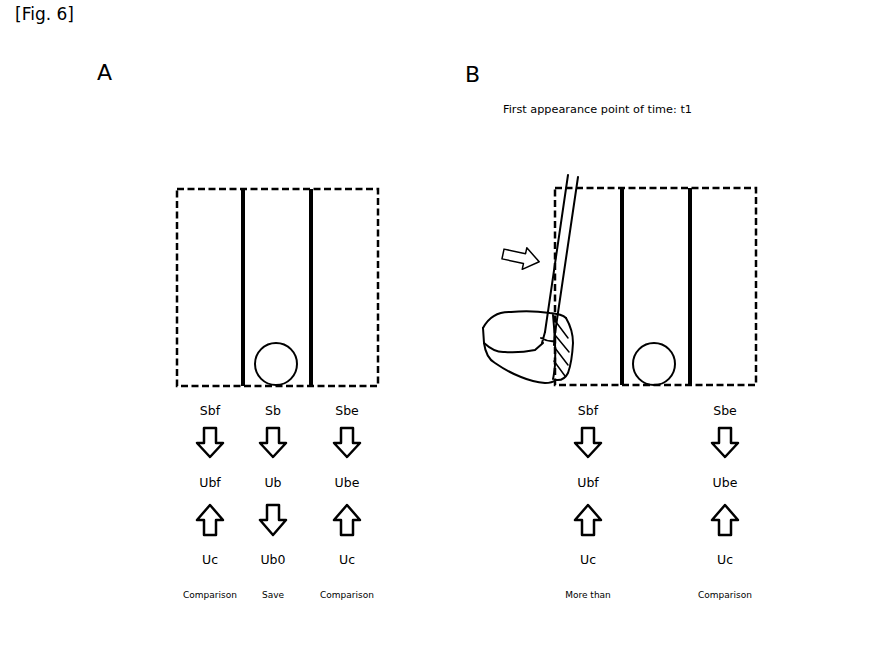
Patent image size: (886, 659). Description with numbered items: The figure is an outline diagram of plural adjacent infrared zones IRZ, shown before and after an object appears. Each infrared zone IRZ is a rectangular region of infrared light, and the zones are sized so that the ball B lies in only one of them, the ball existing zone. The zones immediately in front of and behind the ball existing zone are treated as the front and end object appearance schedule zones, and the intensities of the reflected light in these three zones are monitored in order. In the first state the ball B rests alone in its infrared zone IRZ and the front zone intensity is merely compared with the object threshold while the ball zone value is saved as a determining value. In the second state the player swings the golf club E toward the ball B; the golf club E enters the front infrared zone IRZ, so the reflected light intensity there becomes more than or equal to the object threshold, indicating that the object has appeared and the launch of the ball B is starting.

In FIG. 6A, the infrared zone IRZ is at (333, 186).
In FIG. 6B, the infrared zone IRZ is at (712, 186).
In FIG. 6A, the ball B is at (281, 359).
In FIG. 6B, the ball B is at (660, 361).
In FIG. 6B, the golf club E is at (556, 212).